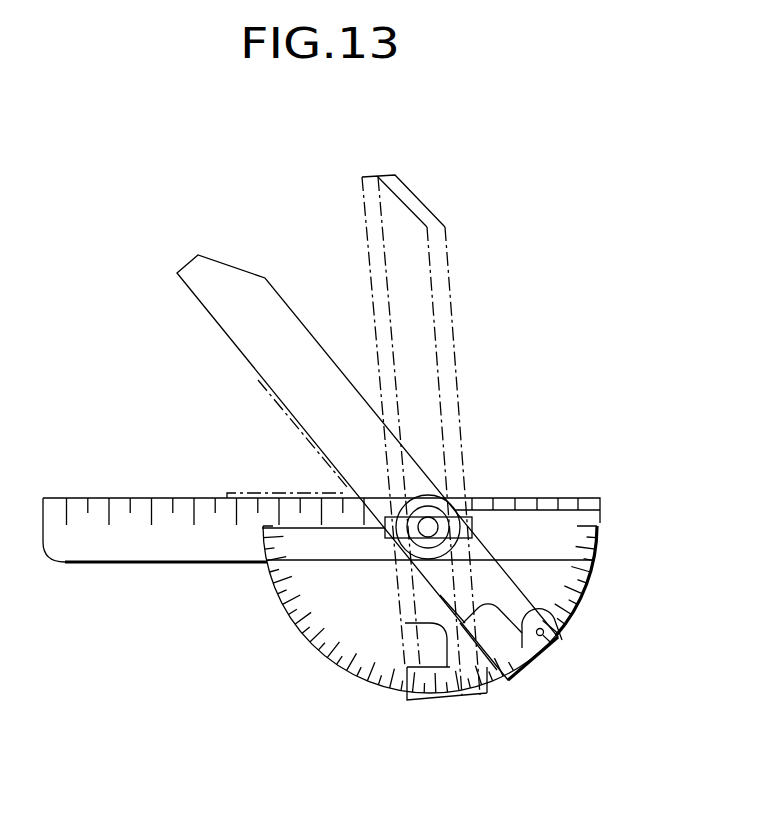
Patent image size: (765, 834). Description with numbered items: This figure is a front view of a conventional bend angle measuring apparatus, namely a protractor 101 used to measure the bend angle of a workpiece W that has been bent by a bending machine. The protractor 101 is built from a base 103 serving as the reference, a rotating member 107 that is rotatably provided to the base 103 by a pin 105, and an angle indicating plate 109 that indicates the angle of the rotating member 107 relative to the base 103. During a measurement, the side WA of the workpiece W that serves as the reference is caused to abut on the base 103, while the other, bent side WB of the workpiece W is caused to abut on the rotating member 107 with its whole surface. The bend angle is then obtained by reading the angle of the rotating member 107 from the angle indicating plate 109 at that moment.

The protractor 101 is at (563, 366).
The base 103 is at (78, 498).
The pin 105 is at (450, 497).
The rotating member 107 is at (238, 268).
The angle indicating plate 109 is at (592, 587).
The workpiece W is at (173, 373).
The side of the workpiece serving as reference WA is at (267, 493).
The bent side of the workpiece WB is at (285, 420).